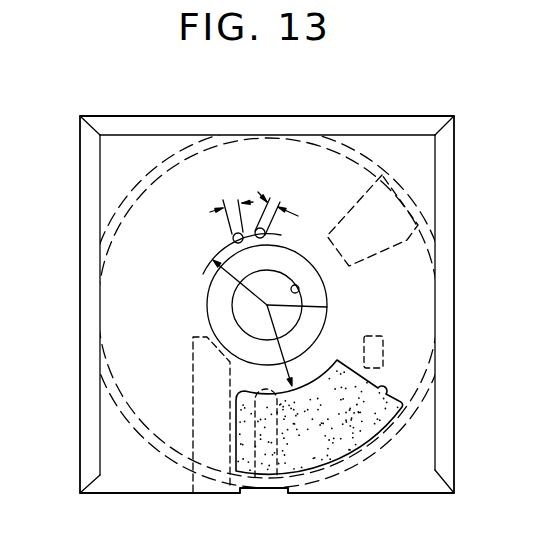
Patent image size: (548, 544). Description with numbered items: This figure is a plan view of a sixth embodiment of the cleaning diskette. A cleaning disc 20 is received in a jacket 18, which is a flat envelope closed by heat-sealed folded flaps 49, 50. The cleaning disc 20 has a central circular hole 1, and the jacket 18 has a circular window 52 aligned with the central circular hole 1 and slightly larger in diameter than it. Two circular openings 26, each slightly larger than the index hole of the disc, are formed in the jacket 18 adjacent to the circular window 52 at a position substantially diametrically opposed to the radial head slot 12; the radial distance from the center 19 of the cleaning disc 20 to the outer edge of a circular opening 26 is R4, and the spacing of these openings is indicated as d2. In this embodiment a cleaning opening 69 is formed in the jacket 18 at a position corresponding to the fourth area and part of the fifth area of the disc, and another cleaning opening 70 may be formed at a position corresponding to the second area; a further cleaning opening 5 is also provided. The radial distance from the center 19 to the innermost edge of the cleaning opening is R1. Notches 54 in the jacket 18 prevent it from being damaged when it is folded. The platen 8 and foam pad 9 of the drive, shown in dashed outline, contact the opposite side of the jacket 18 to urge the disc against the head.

The folded flap 50 is at (399, 124).
The jacket 18 is at (80, 401).
The folded flap 49 is at (448, 228).
The cleaning disc 20 is at (133, 182).
The cleaning opening 5 is at (120, 222).
The center of the disc 19 is at (327, 307).
The central circular hole 1 is at (299, 292).
The circular window 52 is at (328, 301).
The circular openings 26 is at (232, 238).
The hole spacing dimension d2 is at (257, 204).
The radial distance to outer edge of circular opening R4 is at (222, 268).
The radial distance to innermost edge of cleaning opening R1 is at (308, 357).
The foam pad 9 is at (385, 358).
The cleaning opening 69 is at (402, 398).
The radial head slot 12 is at (273, 453).
The platen 8 is at (192, 370).
The notches 54 is at (242, 492).
The cleaning opening 70 is at (410, 238).